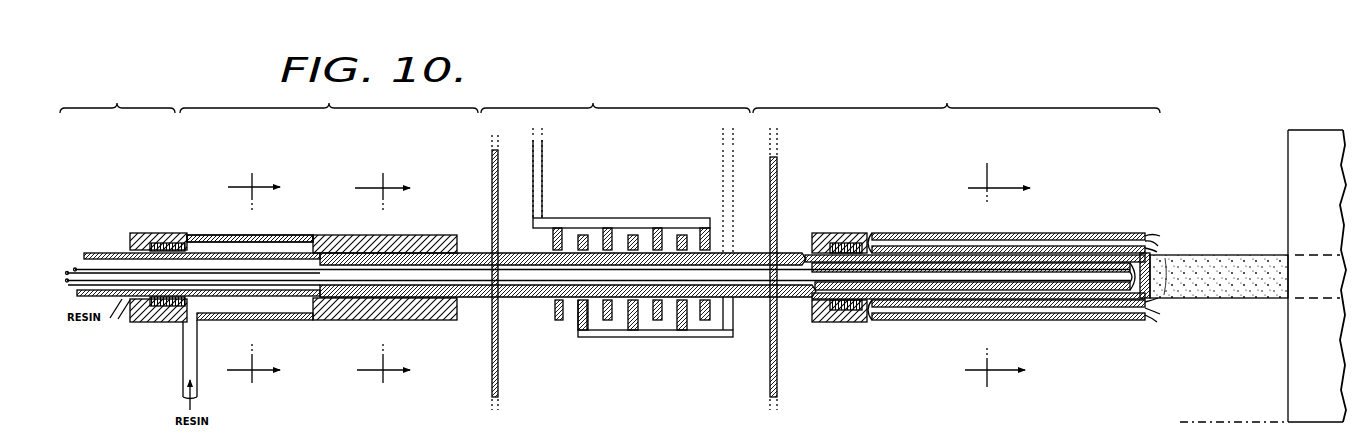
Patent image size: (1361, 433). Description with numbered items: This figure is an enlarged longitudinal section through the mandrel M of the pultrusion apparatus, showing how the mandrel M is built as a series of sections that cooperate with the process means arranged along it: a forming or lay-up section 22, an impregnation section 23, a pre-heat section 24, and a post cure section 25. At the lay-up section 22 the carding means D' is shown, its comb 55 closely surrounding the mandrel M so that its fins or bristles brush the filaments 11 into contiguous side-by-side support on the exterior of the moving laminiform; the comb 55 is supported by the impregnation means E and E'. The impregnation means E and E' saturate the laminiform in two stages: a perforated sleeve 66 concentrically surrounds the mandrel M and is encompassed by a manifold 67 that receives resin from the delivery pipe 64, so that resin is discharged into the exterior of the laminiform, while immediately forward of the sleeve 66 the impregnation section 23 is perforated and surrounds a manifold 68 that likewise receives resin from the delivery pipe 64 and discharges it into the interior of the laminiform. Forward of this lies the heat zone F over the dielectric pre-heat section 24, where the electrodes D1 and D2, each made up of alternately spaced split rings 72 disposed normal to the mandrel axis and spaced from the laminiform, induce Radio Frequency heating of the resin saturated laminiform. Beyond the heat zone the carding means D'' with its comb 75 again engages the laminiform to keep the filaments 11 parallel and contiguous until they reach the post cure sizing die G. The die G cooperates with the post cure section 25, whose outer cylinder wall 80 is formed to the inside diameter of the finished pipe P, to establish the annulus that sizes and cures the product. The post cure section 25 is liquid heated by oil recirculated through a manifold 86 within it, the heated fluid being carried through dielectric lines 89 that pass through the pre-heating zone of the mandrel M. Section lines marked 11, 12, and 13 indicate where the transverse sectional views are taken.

The forming or lay-up section 22 is at (117, 99).
The impregnation section 23 is at (329, 100).
The pre-heat section 24 is at (615, 100).
The post cure section 25 is at (956, 100).
The filaments 11 is at (242, 280).
The section line 12- 12 is at (376, 280).
The section line 13- 13 is at (985, 279).
The mandrel M is at (93, 250).
The lines 89 is at (110, 269).
The delivery pipe 64 is at (133, 300).
The carding means D' is at (153, 309).
The comb 55 is at (172, 241).
The sleeve 66 is at (218, 246).
The manifold 67 is at (297, 243).
The impregnation means E is at (250, 222).
The impregnation means E' is at (385, 261).
The manifold 68 is at (418, 297).
The heat zone F is at (644, 218).
The electrode D1 is at (598, 233).
The electrode D2 is at (641, 317).
The split rings 72 is at (655, 238).
The carding means D'' is at (839, 244).
The comb 75 is at (848, 242).
The manifold 86 is at (920, 262).
The outer cylinder wall 80 is at (985, 278).
The post cure sizing die G is at (1120, 228).
The pipe P is at (1240, 258).